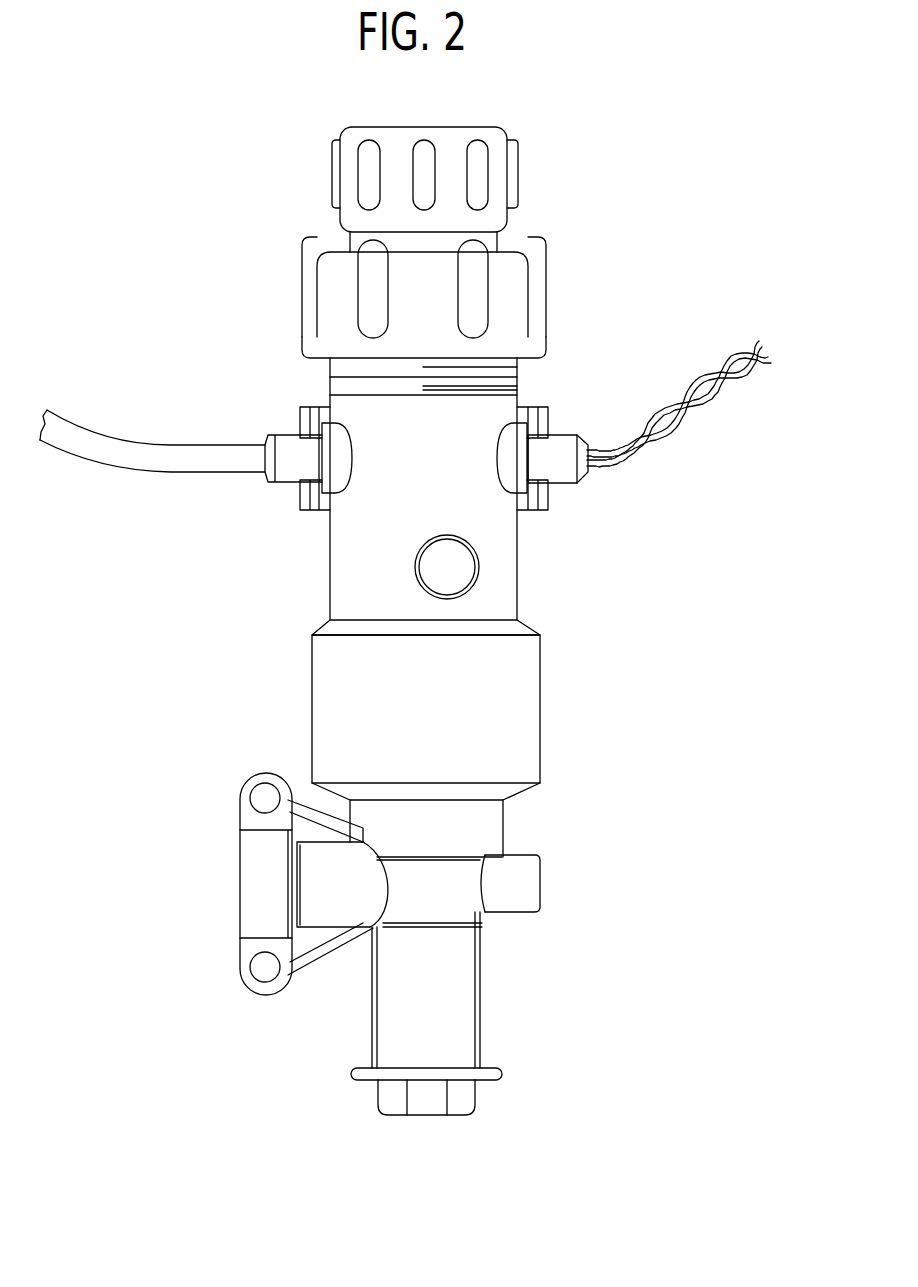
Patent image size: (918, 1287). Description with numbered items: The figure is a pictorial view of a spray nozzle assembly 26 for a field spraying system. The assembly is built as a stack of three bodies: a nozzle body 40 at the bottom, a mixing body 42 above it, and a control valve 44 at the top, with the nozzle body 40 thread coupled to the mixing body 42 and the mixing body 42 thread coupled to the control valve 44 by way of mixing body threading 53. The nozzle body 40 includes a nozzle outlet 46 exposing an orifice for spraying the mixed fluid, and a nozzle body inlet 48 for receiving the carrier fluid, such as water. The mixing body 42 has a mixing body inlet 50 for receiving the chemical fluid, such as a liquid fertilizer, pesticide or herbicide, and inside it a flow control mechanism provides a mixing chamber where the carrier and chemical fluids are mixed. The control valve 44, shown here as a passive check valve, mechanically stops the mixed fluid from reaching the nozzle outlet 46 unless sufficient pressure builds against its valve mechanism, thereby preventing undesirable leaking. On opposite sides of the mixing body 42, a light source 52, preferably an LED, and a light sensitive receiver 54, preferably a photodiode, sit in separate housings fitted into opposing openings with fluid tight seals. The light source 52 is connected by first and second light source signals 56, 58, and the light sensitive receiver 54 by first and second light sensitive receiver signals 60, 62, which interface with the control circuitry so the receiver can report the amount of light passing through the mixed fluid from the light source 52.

The spray nozzle assembly 26 is at (620, 112).
The nozzle body 40 is at (470, 1002).
The mixing body 42 is at (353, 580).
The control valve 44 is at (395, 148).
The nozzle outlet 46 is at (419, 1107).
The nozzle body inlet 48 is at (255, 887).
The mixing body inlet 50 is at (463, 571).
The light source 52 is at (322, 422).
The mixing body threading 53 is at (517, 380).
The light sensitive receiver 54 is at (528, 457).
The first light source signal 56 is at (268, 440).
The second light source signal 58 is at (268, 474).
The first light sensitive receiver signal 60 is at (606, 447).
The second light sensitive receiver signal 62 is at (615, 468).